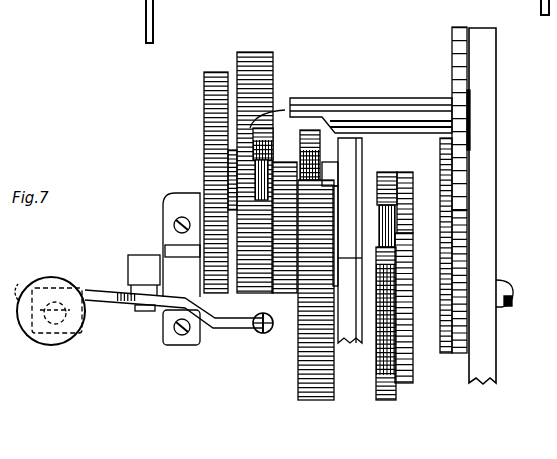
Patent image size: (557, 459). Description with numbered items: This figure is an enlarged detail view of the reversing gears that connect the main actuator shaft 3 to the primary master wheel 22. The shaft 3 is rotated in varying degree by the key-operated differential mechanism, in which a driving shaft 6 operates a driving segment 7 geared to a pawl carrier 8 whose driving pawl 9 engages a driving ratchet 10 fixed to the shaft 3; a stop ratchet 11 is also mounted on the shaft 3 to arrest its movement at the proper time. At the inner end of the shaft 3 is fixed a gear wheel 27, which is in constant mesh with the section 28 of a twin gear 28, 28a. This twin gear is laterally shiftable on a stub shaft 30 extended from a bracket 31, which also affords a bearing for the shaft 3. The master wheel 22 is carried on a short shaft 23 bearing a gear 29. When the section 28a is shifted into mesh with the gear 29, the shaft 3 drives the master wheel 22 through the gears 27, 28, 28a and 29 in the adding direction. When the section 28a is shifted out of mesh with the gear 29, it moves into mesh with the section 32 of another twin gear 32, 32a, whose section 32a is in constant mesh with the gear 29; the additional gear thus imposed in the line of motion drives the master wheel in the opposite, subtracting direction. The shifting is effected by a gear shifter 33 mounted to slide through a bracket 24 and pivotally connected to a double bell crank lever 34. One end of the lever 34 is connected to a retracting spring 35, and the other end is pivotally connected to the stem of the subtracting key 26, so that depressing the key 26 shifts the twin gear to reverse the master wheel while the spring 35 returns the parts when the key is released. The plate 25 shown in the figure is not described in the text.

The main actuator shaft 3 is at (507, 290).
The driving shaft 6 is at (28, 294).
The driving segment 7 is at (390, 401).
The pawl carrier 8 is at (384, 173).
The driving pawl 9 is at (404, 183).
The driving ratchet 10 is at (400, 257).
The stop ratchet 11 is at (445, 217).
The primary master wheel 22 is at (458, 27).
The short shaft 23 is at (413, 99).
The bracket 24 is at (203, 123).
The plate 25 is at (485, 82).
The subtracting key 26 is at (48, 278).
The gear wheel 27 is at (298, 377).
The twin gear section 28 is at (303, 130).
The twin gear section 28a is at (265, 130).
The gear 29 is at (273, 53).
The stub shaft 30 is at (330, 172).
The bracket 31 is at (350, 140).
The twin gear section 32 is at (232, 195).
The twin gear section 32a is at (242, 183).
The gear shifter 33 is at (133, 267).
The double bell crank lever 34 is at (118, 305).
The retracting spring 35 is at (258, 335).